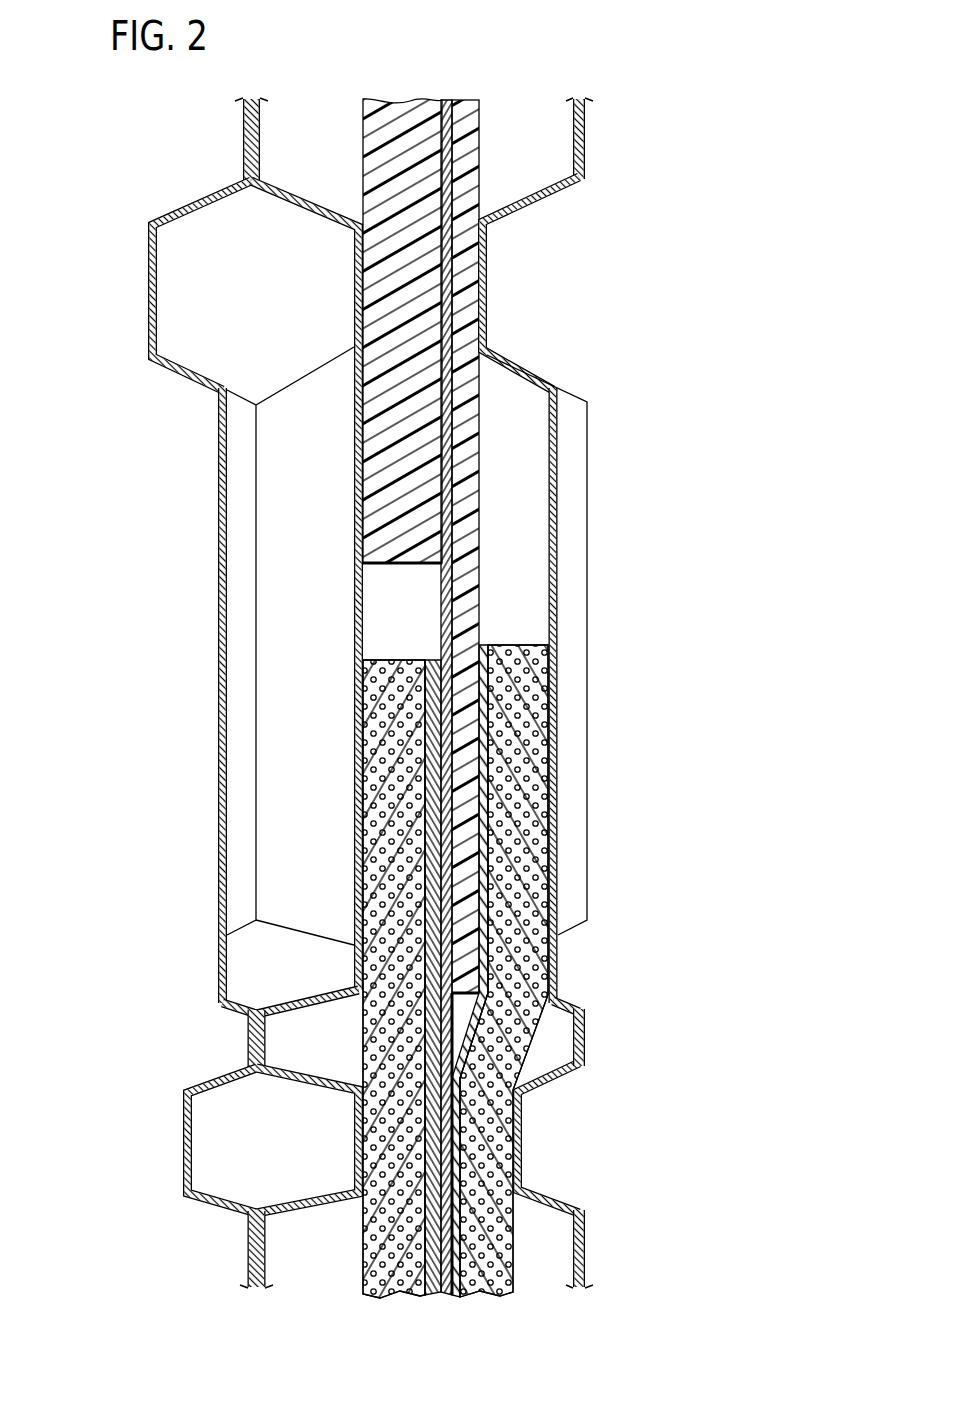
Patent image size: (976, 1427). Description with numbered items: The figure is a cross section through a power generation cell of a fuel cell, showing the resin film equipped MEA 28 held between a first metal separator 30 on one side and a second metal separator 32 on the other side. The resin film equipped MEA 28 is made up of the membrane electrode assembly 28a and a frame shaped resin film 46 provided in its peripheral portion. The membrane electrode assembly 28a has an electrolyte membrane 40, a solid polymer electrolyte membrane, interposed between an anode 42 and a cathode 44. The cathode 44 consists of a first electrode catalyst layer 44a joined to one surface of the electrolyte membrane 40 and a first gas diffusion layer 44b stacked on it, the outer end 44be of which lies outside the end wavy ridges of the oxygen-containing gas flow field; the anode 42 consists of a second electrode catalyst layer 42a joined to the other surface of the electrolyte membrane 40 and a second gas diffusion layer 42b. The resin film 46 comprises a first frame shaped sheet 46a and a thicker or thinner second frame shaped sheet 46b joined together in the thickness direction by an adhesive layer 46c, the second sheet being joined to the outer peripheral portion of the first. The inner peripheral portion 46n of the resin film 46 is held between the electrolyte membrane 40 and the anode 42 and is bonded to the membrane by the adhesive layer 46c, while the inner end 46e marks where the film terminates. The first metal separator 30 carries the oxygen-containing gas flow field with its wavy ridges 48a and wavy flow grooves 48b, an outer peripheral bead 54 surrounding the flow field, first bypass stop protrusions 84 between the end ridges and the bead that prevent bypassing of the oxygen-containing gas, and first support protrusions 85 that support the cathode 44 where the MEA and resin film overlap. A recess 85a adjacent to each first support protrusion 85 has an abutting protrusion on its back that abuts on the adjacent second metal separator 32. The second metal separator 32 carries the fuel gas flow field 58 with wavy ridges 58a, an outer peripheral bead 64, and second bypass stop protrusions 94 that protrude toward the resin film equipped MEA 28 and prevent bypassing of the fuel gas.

The resin film equipped MEA 28 is at (398, 86).
The membrane electrode assembly 28a is at (523, 1239).
The first metal separator 30 is at (260, 114).
The second metal separator 32 is at (243, 126).
The electrolyte membrane 40 is at (440, 1260).
The anode 42 is at (657, 722).
The second electrode catalyst layer 42a is at (485, 743).
The second gas diffusion layer 42b is at (530, 790).
The cathode 44 is at (160, 700).
The first electrode catalyst layer 44a is at (432, 731).
The first gas diffusion layer 44b is at (385, 753).
The outer end of the first gas diffusion layer 44be is at (403, 660).
The frame shaped resin film 46 is at (483, 110).
The first frame shaped sheet 46a is at (467, 487).
The second frame shaped sheet 46b is at (380, 483).
The adhesive layer 46c is at (450, 527).
The inner end of the resin film 46e is at (460, 997).
The inner peripheral portion of the resin film 46n is at (467, 847).
The wavy ridge 48a is at (358, 1153).
The wavy flow groove 48b is at (283, 1253).
The outer peripheral bead 54 is at (307, 190).
The fuel gas flow field 58 is at (208, 1227).
The wavy ridge 58a is at (218, 993).
The outer peripheral bead 64 is at (201, 194).
The first bypass stop protrusion 84 is at (354, 598).
The first support protrusion 85 is at (365, 976).
The recess 85a is at (258, 1036).
The second bypass stop protrusion 94 is at (218, 558).